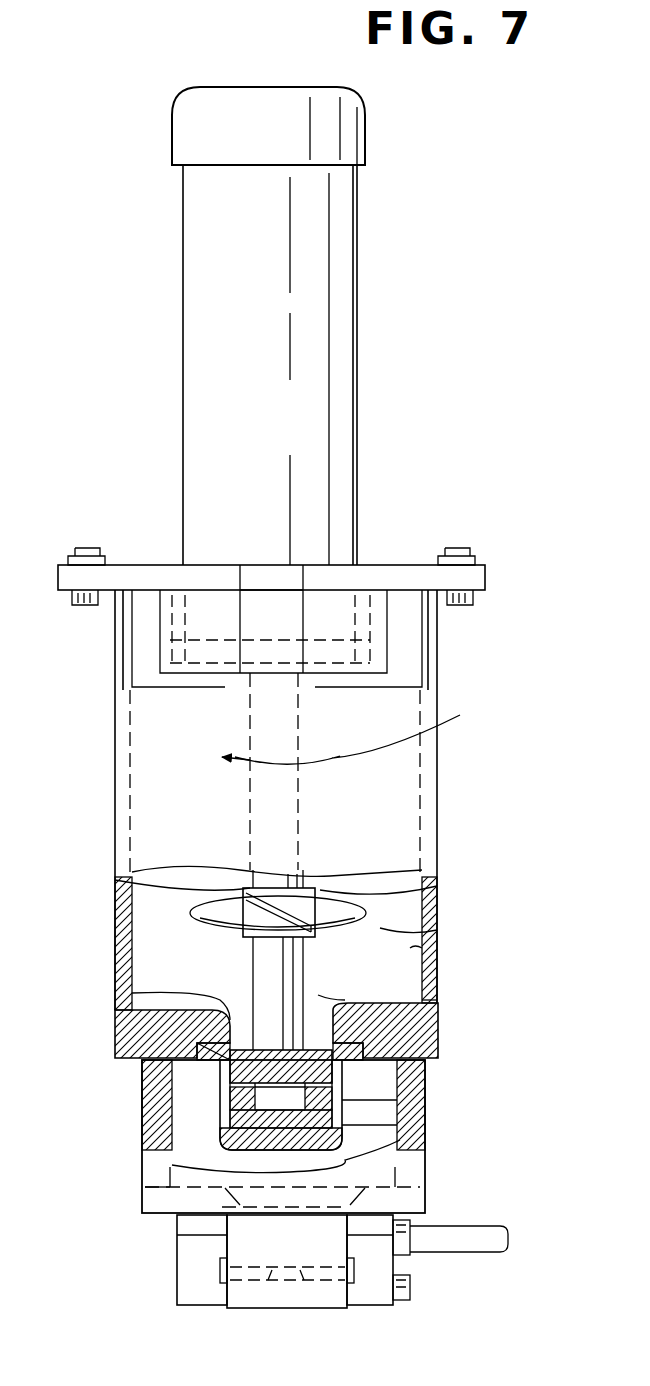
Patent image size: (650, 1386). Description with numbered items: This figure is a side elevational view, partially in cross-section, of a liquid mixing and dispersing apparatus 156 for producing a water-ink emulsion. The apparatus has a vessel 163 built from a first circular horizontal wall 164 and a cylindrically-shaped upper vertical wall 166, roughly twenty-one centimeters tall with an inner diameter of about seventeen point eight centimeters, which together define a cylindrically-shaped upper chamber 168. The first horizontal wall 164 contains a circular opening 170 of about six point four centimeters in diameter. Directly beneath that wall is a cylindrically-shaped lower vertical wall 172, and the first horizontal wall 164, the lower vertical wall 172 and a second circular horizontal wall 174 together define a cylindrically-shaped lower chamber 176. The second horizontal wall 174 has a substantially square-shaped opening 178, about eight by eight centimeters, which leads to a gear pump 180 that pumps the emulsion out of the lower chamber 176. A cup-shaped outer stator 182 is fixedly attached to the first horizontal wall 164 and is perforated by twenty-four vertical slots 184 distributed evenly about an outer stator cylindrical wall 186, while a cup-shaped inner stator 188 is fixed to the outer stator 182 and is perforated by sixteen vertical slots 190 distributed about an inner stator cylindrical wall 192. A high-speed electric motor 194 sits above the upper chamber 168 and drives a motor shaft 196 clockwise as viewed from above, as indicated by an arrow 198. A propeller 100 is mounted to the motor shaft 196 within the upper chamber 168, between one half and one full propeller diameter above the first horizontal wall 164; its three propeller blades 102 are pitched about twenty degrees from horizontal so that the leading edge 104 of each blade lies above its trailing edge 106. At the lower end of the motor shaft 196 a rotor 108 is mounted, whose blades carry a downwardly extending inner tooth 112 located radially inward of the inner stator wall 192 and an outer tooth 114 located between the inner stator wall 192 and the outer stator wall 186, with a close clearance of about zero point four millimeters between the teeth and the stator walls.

The propeller 100 is at (132, 872).
The propeller blade 102 is at (190, 915).
The leading edge 104 is at (345, 902).
The trailing edge 106 is at (437, 935).
The rotor 108 is at (318, 1040).
The inner tooth 112 is at (345, 1056).
The outer tooth 114 is at (342, 1093).
The mixing and dispersing apparatus 156 is at (470, 638).
The vessel 163 is at (488, 1012).
The first circular horizontal wall 164 is at (428, 995).
The upper vertical wall 166 is at (420, 950).
The upper chamber 168 is at (400, 885).
The circular opening 170 is at (132, 993).
The lower vertical wall 172 is at (175, 1125).
The second circular horizontal wall 174 is at (440, 1195).
The lower chamber 176 is at (360, 1108).
The square-shaped opening 178 is at (145, 1187).
The gear pump 180 is at (177, 1262).
The outer stator 182 is at (355, 1132).
The vertical slots 184 is at (340, 1105).
The outer stator cylindrical wall 186 is at (340, 1083).
The inner stator 188 is at (230, 1135).
The vertical slots 190 is at (230, 1100).
The inner stator cylindrical wall 192 is at (230, 1080).
The high-speed electric motor 194 is at (183, 273).
The motor shaft 196 is at (305, 953).
The arrow 198 is at (372, 730).